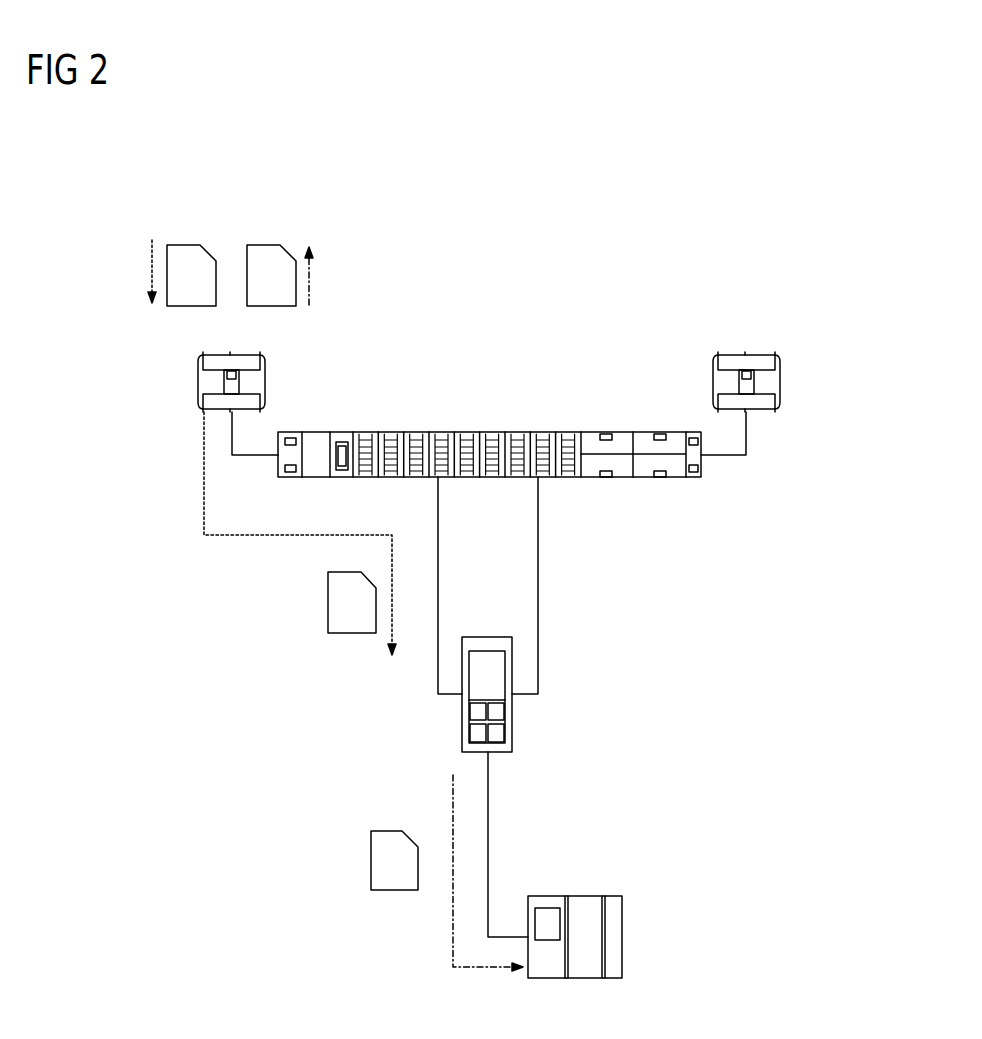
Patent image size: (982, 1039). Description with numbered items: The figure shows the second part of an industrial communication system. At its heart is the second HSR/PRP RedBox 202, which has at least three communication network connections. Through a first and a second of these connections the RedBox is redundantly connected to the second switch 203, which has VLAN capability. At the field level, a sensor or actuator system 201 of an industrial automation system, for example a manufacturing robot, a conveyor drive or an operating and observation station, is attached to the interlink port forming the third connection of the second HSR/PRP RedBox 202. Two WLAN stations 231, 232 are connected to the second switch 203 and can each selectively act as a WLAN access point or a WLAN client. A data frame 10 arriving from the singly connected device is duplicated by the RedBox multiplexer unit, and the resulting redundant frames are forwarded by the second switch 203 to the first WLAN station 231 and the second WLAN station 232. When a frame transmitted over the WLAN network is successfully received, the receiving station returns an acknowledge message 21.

The data frame 10 is at (396, 890).
The acknowledge message 21 is at (264, 245).
The sensor or actuator system 201 is at (624, 942).
The second HSR/PRP RedBox 202 is at (514, 728).
The second switch 203 is at (583, 432).
The first WLAN station 231 is at (267, 381).
The second WLAN station 232 is at (782, 381).